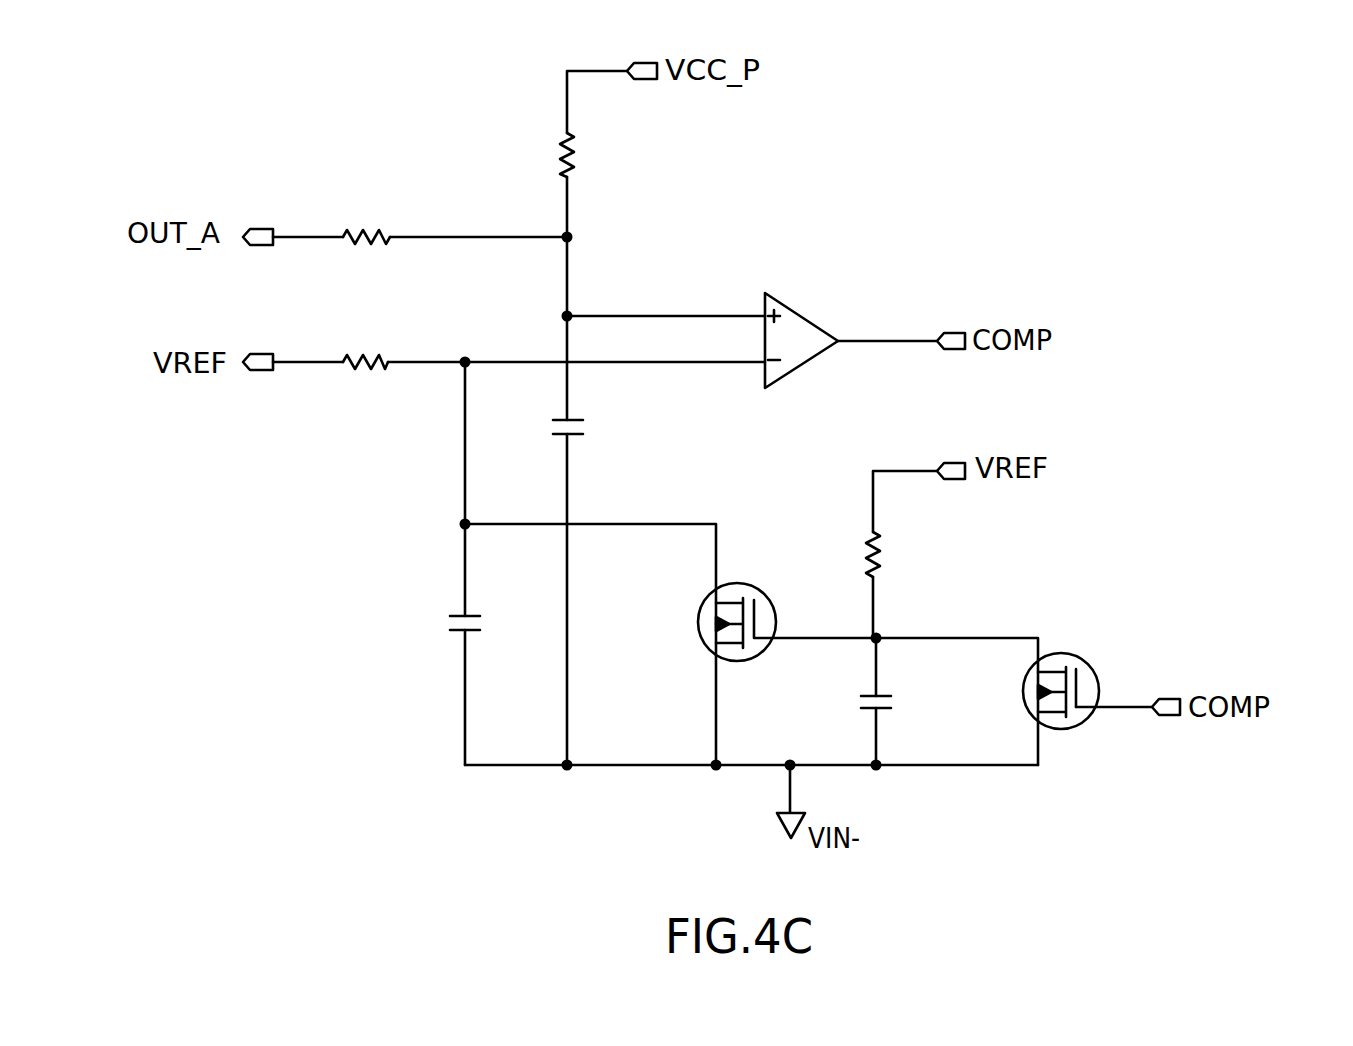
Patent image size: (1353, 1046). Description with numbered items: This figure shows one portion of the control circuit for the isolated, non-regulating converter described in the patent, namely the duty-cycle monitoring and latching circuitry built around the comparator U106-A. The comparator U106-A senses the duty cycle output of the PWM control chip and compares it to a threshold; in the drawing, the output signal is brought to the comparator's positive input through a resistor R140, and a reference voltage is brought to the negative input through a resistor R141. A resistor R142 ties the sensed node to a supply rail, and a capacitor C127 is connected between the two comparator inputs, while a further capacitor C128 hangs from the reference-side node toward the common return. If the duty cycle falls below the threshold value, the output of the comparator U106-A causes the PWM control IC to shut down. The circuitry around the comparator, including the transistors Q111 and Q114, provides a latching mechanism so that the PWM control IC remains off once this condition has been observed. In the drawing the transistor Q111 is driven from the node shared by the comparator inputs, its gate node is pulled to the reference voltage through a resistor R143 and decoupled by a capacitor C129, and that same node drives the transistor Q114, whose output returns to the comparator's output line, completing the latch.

The resistor R140 is at (362, 207).
The resistor R141 is at (361, 341).
The resistor R142 is at (609, 156).
The resistor R143 is at (912, 554).
The capacitor C127 is at (605, 425).
The capacitor C128 is at (425, 625).
The capacitor C129 is at (839, 698).
The comparator U106-A is at (751, 340).
The transistor Q111 is at (752, 622).
The transistor Q114 is at (1024, 691).